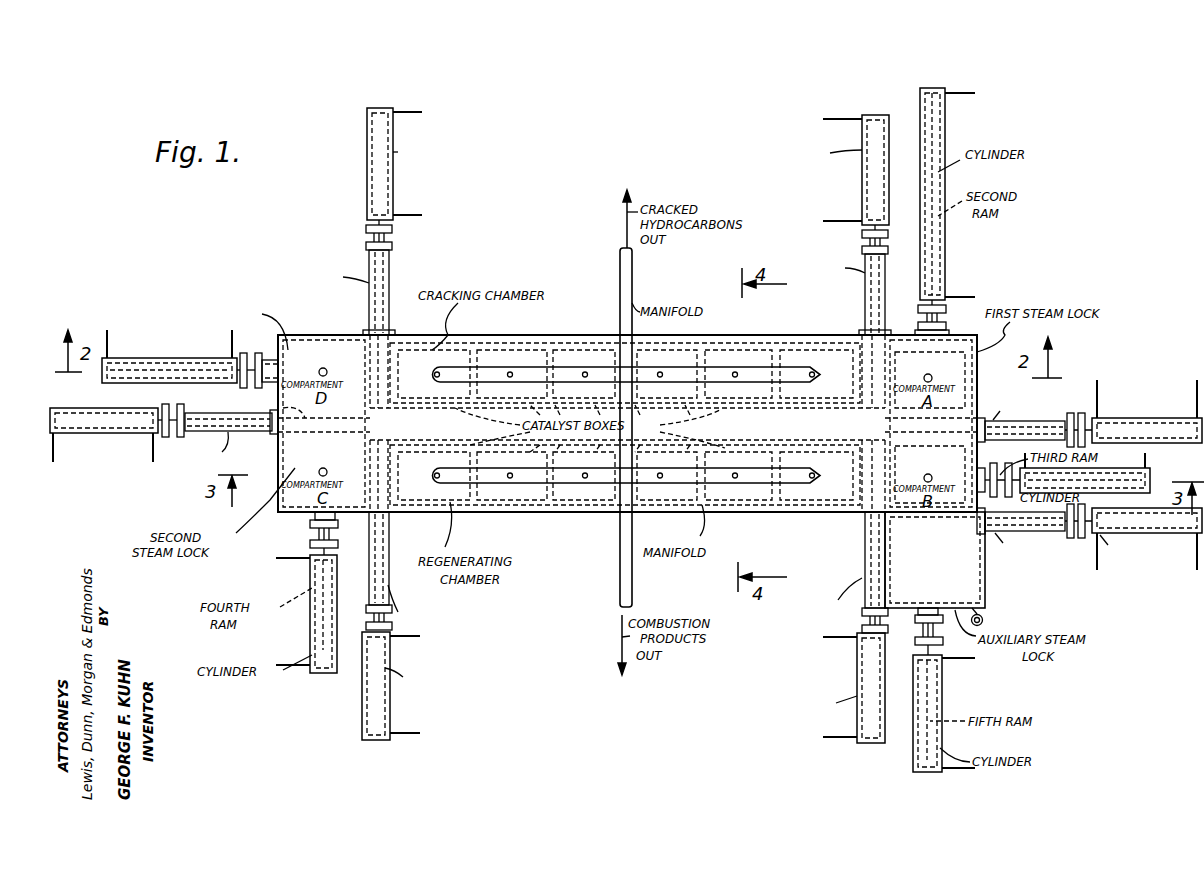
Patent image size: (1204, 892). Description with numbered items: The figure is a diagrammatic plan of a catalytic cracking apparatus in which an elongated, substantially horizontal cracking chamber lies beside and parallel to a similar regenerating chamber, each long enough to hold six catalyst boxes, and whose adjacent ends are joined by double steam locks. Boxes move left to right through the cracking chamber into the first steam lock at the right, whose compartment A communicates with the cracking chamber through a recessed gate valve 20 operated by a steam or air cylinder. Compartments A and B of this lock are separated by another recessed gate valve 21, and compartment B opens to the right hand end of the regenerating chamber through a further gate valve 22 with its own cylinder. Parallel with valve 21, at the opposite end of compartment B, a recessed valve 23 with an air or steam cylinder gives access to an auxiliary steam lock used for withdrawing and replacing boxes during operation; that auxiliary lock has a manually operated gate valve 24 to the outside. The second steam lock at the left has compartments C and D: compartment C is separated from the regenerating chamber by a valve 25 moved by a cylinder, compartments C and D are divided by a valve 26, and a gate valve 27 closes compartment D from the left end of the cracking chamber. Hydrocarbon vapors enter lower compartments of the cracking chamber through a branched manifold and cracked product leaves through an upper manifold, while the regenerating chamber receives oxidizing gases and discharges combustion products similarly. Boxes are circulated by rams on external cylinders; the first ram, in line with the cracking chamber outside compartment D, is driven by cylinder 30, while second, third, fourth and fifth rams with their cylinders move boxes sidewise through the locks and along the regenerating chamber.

The gate valve 20 is at (862, 335).
The gate valve 21 is at (980, 412).
The gate valve 22 is at (858, 515).
The valve 23 is at (985, 535).
The gate valve 24 is at (980, 590).
The valve 25 is at (390, 514).
The valve 26 is at (275, 399).
The gate valve 27 is at (390, 332).
The cylinder 30 is at (190, 345).